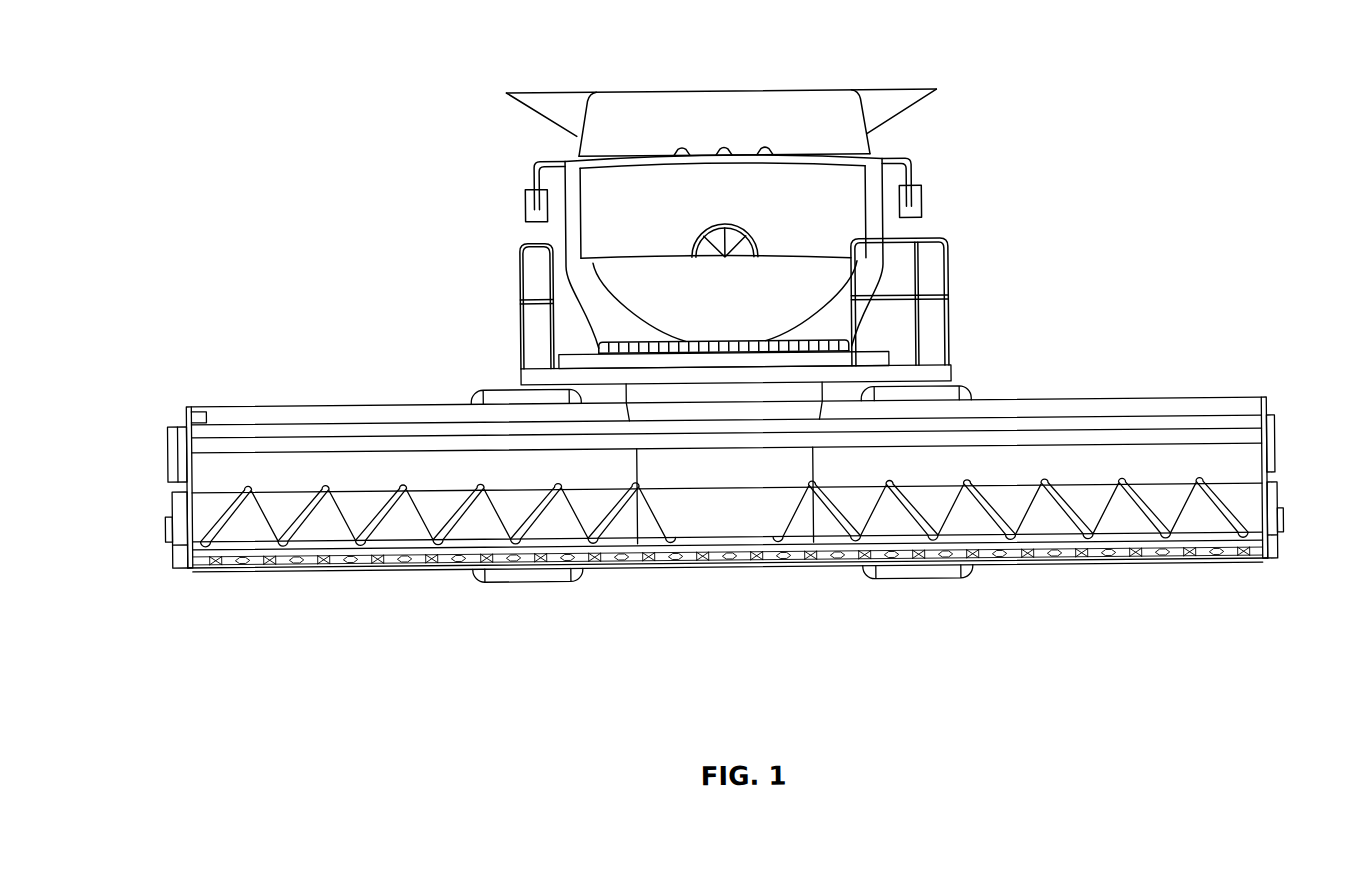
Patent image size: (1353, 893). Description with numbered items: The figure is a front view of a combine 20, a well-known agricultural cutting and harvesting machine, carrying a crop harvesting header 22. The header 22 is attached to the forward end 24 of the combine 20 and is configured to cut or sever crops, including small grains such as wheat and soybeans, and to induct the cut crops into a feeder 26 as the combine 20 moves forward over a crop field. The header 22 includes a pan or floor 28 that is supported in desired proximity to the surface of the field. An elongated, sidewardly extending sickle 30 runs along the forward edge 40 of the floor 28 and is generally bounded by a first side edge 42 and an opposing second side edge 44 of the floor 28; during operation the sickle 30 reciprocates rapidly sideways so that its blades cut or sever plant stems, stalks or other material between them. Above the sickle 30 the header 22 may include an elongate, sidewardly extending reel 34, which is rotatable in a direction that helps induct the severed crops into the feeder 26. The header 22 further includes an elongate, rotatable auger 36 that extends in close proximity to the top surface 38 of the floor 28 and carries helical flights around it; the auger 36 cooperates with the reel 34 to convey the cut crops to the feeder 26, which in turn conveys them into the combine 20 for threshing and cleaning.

The combine 20 is at (340, 95).
The header 22 is at (158, 440).
The forward end 24 is at (525, 378).
The feeder 26 is at (835, 390).
The floor 28 is at (335, 539).
The sickle 30 is at (1134, 561).
The reel 34 is at (1272, 406).
The auger 36 is at (1227, 485).
The top surface 38 is at (256, 538).
The forward edge 40 is at (403, 549).
The first side edge 42 is at (178, 540).
The second side edge 44 is at (1277, 545).